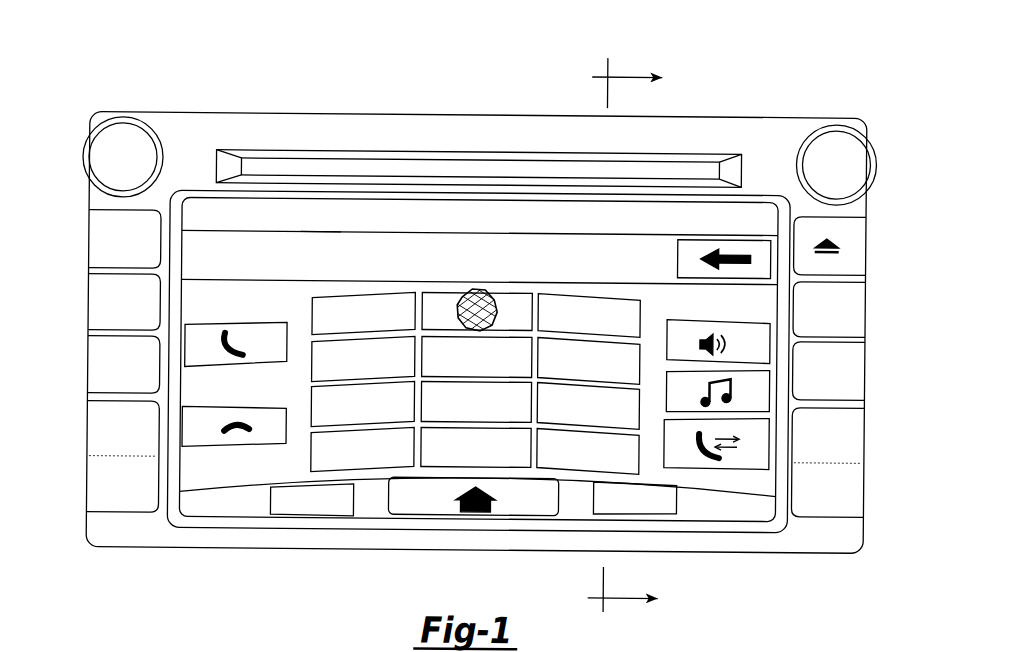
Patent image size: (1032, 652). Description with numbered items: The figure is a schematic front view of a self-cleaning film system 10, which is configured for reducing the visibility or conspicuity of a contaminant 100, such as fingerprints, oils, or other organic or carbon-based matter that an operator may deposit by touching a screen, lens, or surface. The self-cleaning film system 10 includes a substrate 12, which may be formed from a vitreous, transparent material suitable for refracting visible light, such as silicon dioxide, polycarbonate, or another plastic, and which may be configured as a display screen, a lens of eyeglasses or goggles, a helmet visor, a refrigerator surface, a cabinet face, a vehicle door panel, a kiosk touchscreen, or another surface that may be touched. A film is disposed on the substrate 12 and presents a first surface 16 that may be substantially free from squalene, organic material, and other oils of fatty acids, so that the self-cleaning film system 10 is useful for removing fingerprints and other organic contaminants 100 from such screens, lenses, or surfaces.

The self-cleaning film system 10 is at (108, 88).
The substrate 12 is at (571, 206).
The first surface 16 is at (384, 266).
The contaminant 100 is at (470, 290).